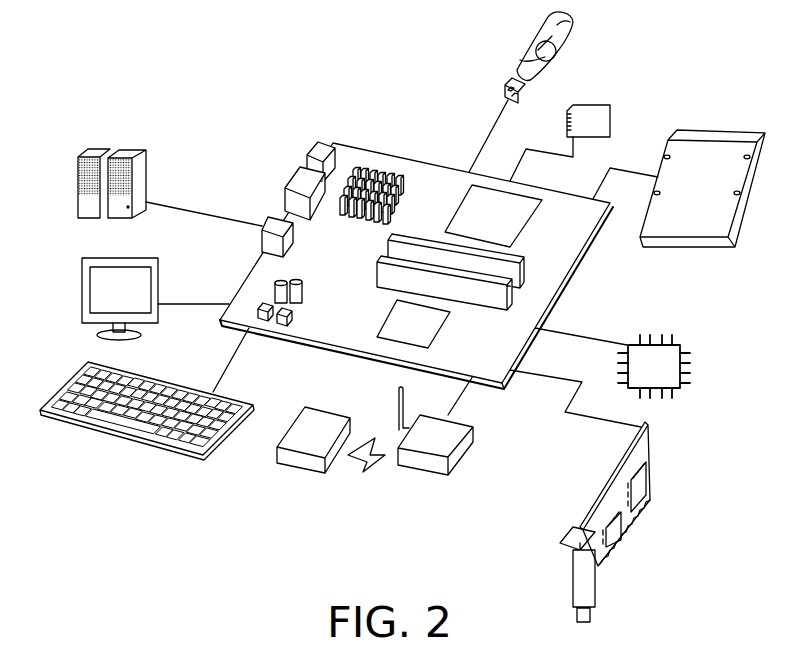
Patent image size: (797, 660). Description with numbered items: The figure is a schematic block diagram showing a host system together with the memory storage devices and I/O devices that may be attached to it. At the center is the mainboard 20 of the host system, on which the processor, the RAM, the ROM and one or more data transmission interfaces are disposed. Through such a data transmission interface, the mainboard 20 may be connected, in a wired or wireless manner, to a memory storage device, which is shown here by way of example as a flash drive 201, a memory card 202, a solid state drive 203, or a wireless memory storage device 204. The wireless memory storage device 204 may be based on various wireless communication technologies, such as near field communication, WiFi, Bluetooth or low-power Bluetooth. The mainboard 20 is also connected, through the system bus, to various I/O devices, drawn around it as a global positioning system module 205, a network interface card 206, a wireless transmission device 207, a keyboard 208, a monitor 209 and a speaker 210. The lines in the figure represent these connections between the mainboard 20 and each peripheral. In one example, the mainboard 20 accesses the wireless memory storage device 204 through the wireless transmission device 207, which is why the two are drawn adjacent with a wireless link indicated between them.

The mainboard 20 is at (418, 160).
The flash drive 201 is at (524, 51).
The memory card 202 is at (612, 108).
The solid state drive 203 is at (718, 128).
The wireless memory storage device 204 is at (290, 417).
The global positioning system module 205 is at (690, 365).
The network interface card 206 is at (652, 472).
The wireless transmission device 207 is at (477, 457).
The keyboard 208 is at (152, 445).
The monitor 209 is at (82, 305).
The speaker 210 is at (78, 205).